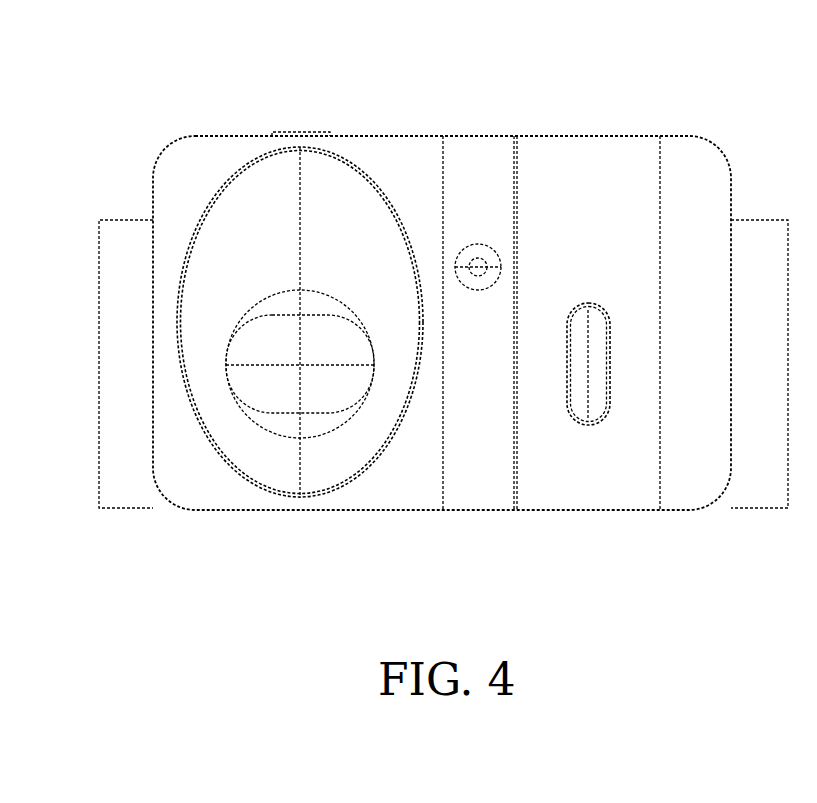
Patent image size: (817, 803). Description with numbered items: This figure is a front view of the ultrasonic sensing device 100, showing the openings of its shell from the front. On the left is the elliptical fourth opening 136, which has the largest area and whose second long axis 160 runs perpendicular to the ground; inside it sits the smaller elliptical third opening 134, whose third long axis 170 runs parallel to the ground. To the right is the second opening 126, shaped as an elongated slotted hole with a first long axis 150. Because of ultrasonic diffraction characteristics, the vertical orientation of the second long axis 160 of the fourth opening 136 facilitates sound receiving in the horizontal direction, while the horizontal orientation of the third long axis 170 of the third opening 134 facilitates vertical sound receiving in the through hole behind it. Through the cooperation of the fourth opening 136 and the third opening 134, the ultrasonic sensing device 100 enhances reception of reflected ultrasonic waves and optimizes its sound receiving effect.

The ultrasonic sensing device 100 is at (83, 65).
The second opening 126 is at (602, 305).
The third opening 134 is at (313, 315).
The fourth opening 136 is at (243, 476).
The first long axis 150 is at (590, 410).
The second long axis 160 is at (300, 195).
The third long axis 170 is at (343, 365).